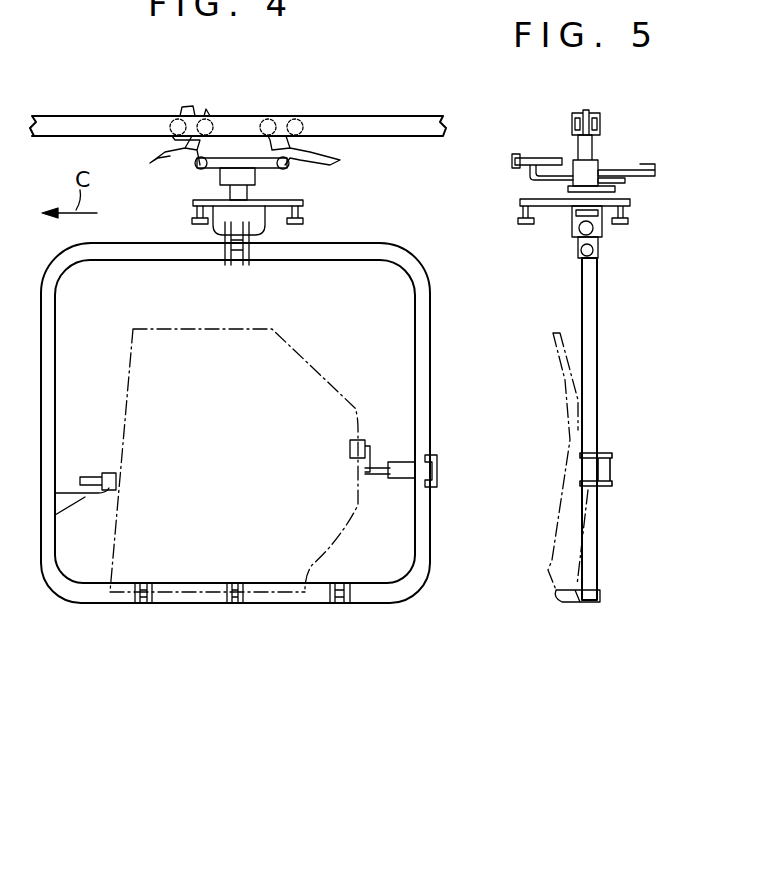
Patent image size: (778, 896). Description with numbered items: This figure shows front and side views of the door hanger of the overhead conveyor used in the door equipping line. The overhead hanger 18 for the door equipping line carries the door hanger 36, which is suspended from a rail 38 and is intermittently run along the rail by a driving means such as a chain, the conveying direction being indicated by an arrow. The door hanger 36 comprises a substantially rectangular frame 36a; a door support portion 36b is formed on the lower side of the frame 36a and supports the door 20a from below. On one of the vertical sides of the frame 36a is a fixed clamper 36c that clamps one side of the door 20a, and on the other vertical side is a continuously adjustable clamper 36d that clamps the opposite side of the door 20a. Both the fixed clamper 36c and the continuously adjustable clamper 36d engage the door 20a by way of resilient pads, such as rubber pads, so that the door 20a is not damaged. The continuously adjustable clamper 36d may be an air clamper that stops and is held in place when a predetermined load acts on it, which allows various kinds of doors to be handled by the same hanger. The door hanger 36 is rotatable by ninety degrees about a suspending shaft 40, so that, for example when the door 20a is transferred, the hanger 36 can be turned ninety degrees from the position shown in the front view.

In FIG. 4, the overhead hanger 18 is at (399, 106).
In FIG. 5, the overhead hanger 18 is at (623, 150).
In FIG. 4, the rail 38 is at (393, 130).
In FIG. 4, the suspending shaft 40 is at (230, 198).
In FIG. 4, the door hanger 36 is at (274, 417).
In FIG. 5, the door hanger 36 is at (597, 399).
In FIG. 4, the frame 36a is at (432, 357).
In FIG. 5, the frame 36a is at (598, 358).
In FIG. 4, the door support portion 36b is at (236, 583).
In FIG. 5, the door support portion 36b is at (568, 592).
In FIG. 4, the fixed clamper 36c is at (116, 472).
In FIG. 4, the continuously adjustable clamper 36d is at (350, 445).
In FIG. 5, the continuously adjustable clamper 36d is at (606, 445).
In FIG. 4, the door 20a is at (296, 347).
In FIG. 5, the door 20a is at (572, 413).